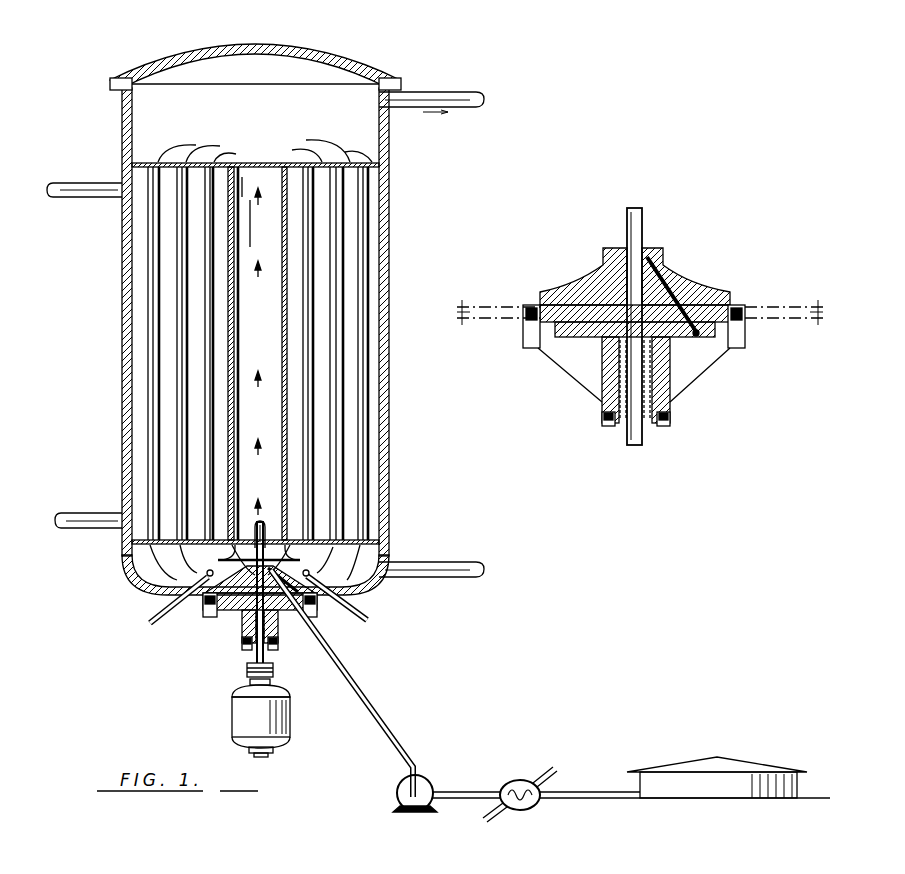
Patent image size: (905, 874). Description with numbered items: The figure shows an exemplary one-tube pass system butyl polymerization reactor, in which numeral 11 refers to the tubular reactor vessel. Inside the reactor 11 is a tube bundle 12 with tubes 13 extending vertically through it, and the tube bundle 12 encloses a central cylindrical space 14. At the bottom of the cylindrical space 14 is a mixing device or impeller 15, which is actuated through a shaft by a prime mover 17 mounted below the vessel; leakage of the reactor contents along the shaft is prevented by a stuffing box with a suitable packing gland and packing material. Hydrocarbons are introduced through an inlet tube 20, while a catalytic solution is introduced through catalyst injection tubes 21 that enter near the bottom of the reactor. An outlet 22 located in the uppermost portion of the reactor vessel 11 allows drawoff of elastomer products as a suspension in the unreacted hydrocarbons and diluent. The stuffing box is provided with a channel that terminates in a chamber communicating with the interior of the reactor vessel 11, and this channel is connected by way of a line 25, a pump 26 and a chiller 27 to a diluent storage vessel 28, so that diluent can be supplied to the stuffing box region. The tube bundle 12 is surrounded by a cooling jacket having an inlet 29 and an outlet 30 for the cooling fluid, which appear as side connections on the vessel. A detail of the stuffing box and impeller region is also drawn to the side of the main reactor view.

The tubular reactor 11 is at (183, 62).
The tube bundle 12 is at (340, 257).
The tubes 13 is at (147, 315).
The cylindrical space 14 is at (258, 165).
The impeller 15 is at (260, 520).
The prime mover 17 is at (261, 718).
The inlet tube 20 is at (456, 578).
The catalyst injection tubes 21 is at (158, 608).
The outlet 22 is at (430, 92).
The line 25 is at (372, 702).
The pump 26 is at (397, 800).
The chiller 27 is at (513, 780).
The diluent storage vessel 28 is at (728, 769).
The inlet 29 is at (83, 183).
The outlet 30 is at (90, 513).